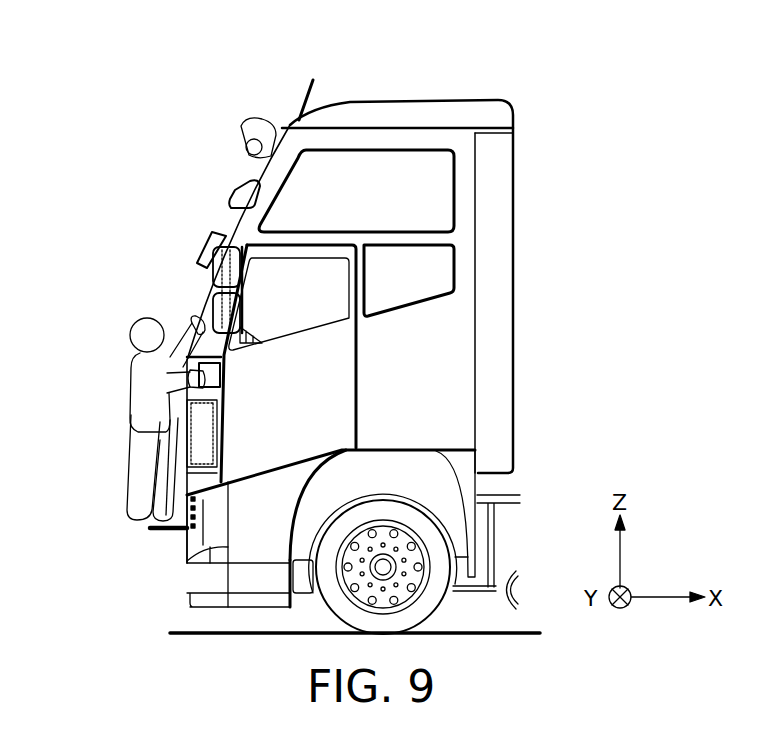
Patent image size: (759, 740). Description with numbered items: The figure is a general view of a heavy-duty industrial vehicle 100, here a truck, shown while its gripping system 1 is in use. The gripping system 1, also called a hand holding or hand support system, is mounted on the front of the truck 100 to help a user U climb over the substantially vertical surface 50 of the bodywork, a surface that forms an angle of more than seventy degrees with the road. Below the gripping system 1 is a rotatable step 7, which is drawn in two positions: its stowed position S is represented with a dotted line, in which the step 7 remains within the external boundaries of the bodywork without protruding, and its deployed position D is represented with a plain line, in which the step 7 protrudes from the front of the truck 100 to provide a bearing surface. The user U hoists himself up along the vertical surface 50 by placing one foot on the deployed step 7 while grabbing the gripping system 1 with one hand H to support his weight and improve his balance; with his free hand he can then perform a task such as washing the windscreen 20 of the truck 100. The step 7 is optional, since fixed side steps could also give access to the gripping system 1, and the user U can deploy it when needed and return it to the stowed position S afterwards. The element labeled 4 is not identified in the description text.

The industrial vehicle 100 is at (390, 84).
The windscreen 20 is at (208, 285).
The gripping system 1 is at (228, 377).
The hand H is at (218, 397).
The user U is at (130, 393).
The step device 4 is at (187, 418).
The substantially vertical surface 50 is at (187, 445).
The rotatable step 7 is at (186, 530).
The stowed position S is at (210, 512).
The deployed position D is at (166, 547).